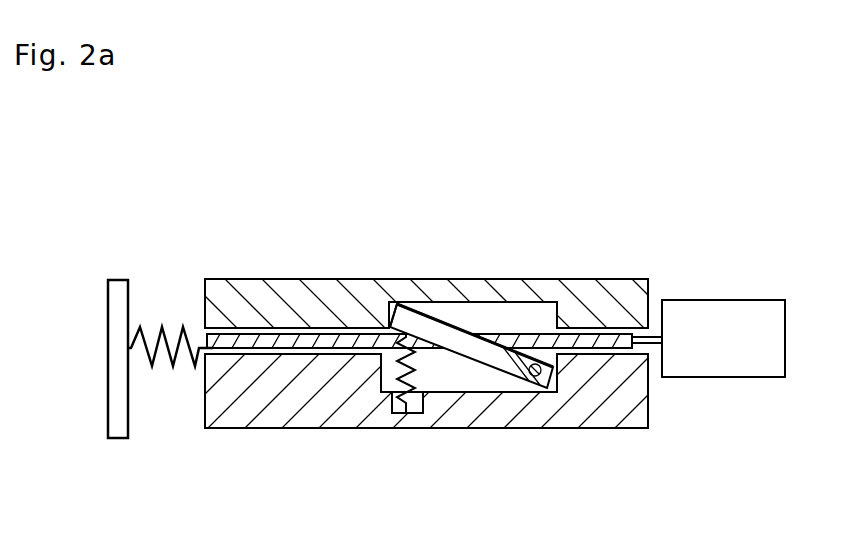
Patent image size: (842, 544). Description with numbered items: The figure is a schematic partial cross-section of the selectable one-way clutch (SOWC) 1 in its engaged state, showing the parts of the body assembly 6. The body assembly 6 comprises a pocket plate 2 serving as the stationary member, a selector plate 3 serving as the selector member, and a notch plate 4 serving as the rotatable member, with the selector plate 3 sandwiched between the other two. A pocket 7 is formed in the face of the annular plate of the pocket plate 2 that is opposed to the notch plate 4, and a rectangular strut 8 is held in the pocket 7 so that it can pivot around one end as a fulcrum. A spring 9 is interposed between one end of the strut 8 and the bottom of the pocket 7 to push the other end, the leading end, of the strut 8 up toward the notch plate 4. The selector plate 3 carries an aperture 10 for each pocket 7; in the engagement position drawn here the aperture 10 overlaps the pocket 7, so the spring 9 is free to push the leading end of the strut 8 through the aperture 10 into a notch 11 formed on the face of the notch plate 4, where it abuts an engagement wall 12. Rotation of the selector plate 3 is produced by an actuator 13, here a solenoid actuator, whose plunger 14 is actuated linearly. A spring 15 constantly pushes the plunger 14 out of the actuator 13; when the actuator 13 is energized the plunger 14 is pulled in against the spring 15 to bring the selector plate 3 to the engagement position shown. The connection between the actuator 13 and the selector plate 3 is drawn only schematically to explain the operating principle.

The selectable one-way clutch 1 is at (578, 215).
The pocket plate 2 is at (305, 420).
The selector plate 3 is at (318, 340).
The notch plate 4 is at (262, 290).
The body assembly 6 is at (607, 432).
The pocket 7 is at (477, 381).
The strut 8 is at (440, 328).
The spring 9 is at (437, 382).
The aperture 10 is at (508, 340).
The notch 11 is at (529, 308).
The engagement wall 12 is at (406, 296).
The actuator 13 is at (715, 300).
The plunger 14 is at (653, 332).
The spring 15 is at (168, 320).